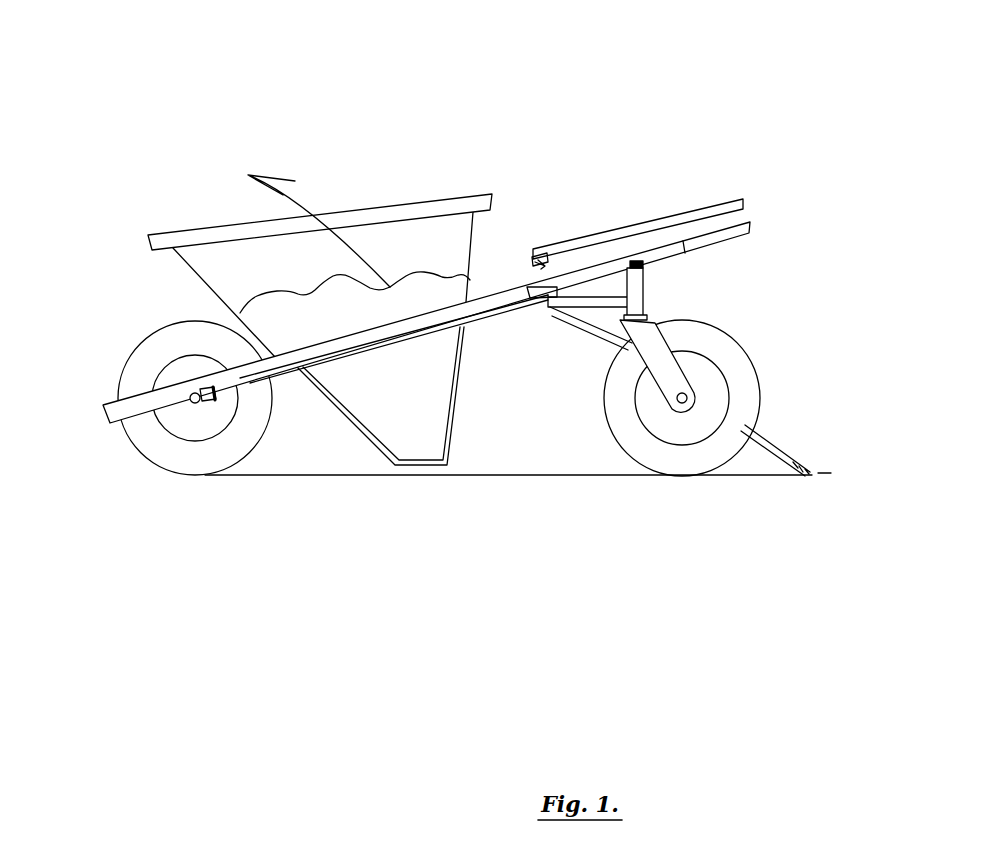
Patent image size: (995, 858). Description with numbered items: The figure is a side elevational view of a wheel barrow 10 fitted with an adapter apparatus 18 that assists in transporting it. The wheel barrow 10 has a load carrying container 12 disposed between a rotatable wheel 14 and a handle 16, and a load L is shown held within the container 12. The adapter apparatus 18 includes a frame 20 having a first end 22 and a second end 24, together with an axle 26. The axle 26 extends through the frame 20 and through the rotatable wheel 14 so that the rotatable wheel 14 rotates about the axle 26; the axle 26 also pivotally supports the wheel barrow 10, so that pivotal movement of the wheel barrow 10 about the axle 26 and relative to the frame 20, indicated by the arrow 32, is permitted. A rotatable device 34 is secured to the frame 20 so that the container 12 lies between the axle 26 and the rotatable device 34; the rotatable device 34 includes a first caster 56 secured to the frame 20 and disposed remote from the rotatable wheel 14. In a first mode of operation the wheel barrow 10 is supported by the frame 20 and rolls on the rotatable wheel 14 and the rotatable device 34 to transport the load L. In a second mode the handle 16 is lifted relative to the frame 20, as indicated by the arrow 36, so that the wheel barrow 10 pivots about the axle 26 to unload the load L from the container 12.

The wheel barrow 10 is at (428, 137).
The load carrying container 12 is at (428, 230).
The rotatable wheel 14 is at (170, 367).
The handle 16 is at (688, 262).
The adapter apparatus 18 is at (515, 382).
The frame 20 is at (350, 398).
The first end 22 is at (197, 400).
The second end 24 is at (557, 290).
The axle 26 is at (194, 393).
The arrow 32 is at (363, 247).
The rotatable device 34 is at (722, 368).
The arrow 36 is at (693, 162).
The first caster 56 is at (655, 418).
The load L is at (405, 290).